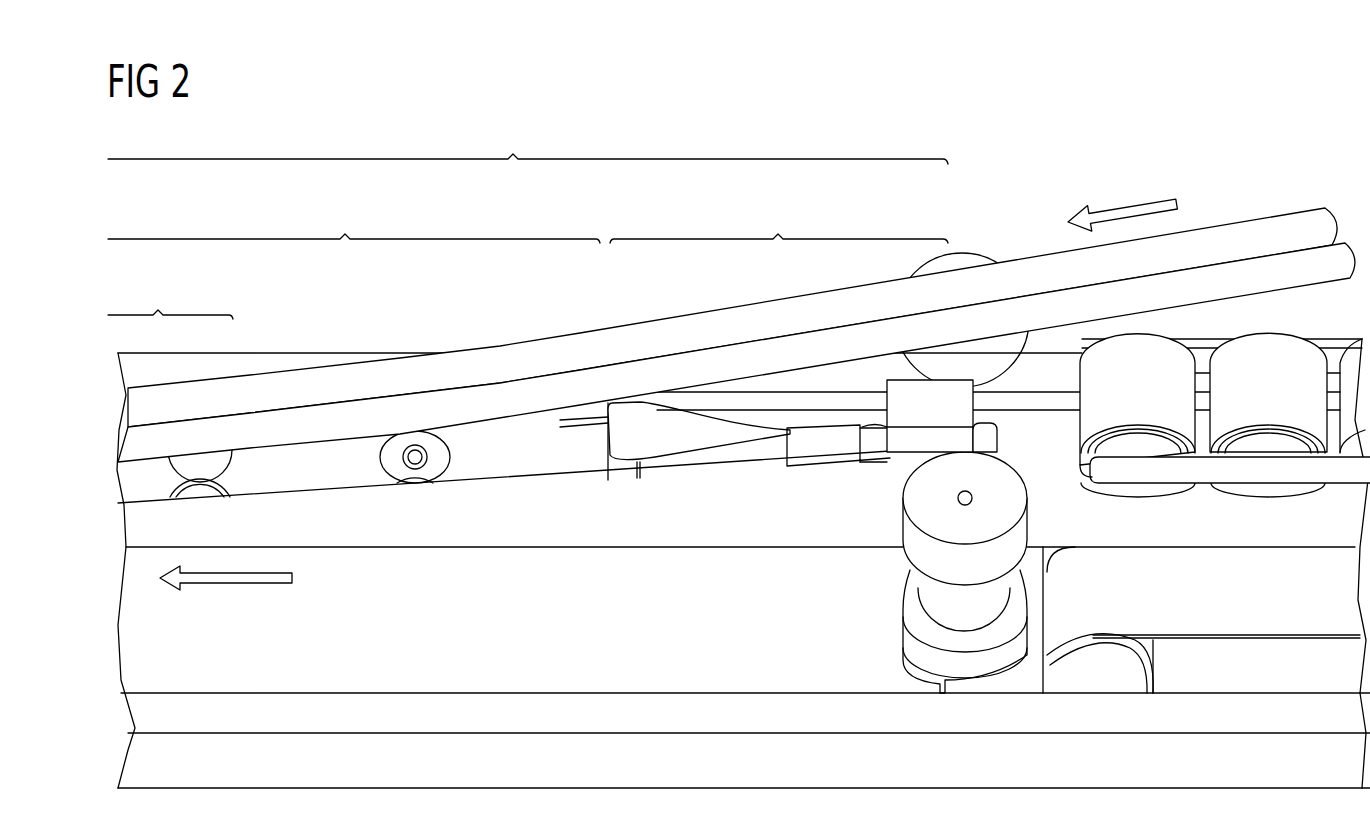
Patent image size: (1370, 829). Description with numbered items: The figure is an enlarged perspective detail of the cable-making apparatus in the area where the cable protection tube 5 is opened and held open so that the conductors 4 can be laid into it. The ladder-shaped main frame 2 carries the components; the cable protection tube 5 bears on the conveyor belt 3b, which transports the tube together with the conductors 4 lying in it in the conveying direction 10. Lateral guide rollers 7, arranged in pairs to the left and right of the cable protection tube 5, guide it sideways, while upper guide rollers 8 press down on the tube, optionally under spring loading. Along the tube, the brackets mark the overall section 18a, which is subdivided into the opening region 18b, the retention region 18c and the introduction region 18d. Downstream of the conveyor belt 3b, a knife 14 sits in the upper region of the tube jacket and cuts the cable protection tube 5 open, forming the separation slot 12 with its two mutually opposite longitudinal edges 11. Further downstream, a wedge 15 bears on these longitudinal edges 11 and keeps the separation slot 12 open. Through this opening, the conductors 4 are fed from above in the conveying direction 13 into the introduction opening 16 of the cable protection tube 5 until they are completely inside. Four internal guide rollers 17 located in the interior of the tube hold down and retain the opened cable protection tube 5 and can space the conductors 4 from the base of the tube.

The main frame 2 is at (590, 768).
The conveyor belt 3b is at (1190, 565).
The conductors 4 is at (1237, 225).
The cable protection tube 5 is at (524, 528).
The lateral guide rollers 7 is at (962, 270).
The upper guide rollers 8 is at (1272, 352).
The conveying direction 10 is at (232, 578).
The longitudinal edges 11 is at (810, 432).
The separation slot 12 is at (840, 452).
The conveying direction 13 is at (1135, 212).
The knife 14 is at (985, 448).
The wedge 15 is at (645, 466).
The introduction opening 16 is at (555, 462).
The internal guide rollers 17 is at (392, 463).
The overall guide section 18a is at (528, 145).
The opening region 18b is at (779, 224).
The retention region 18c is at (354, 224).
The introduction region 18d is at (170, 299).